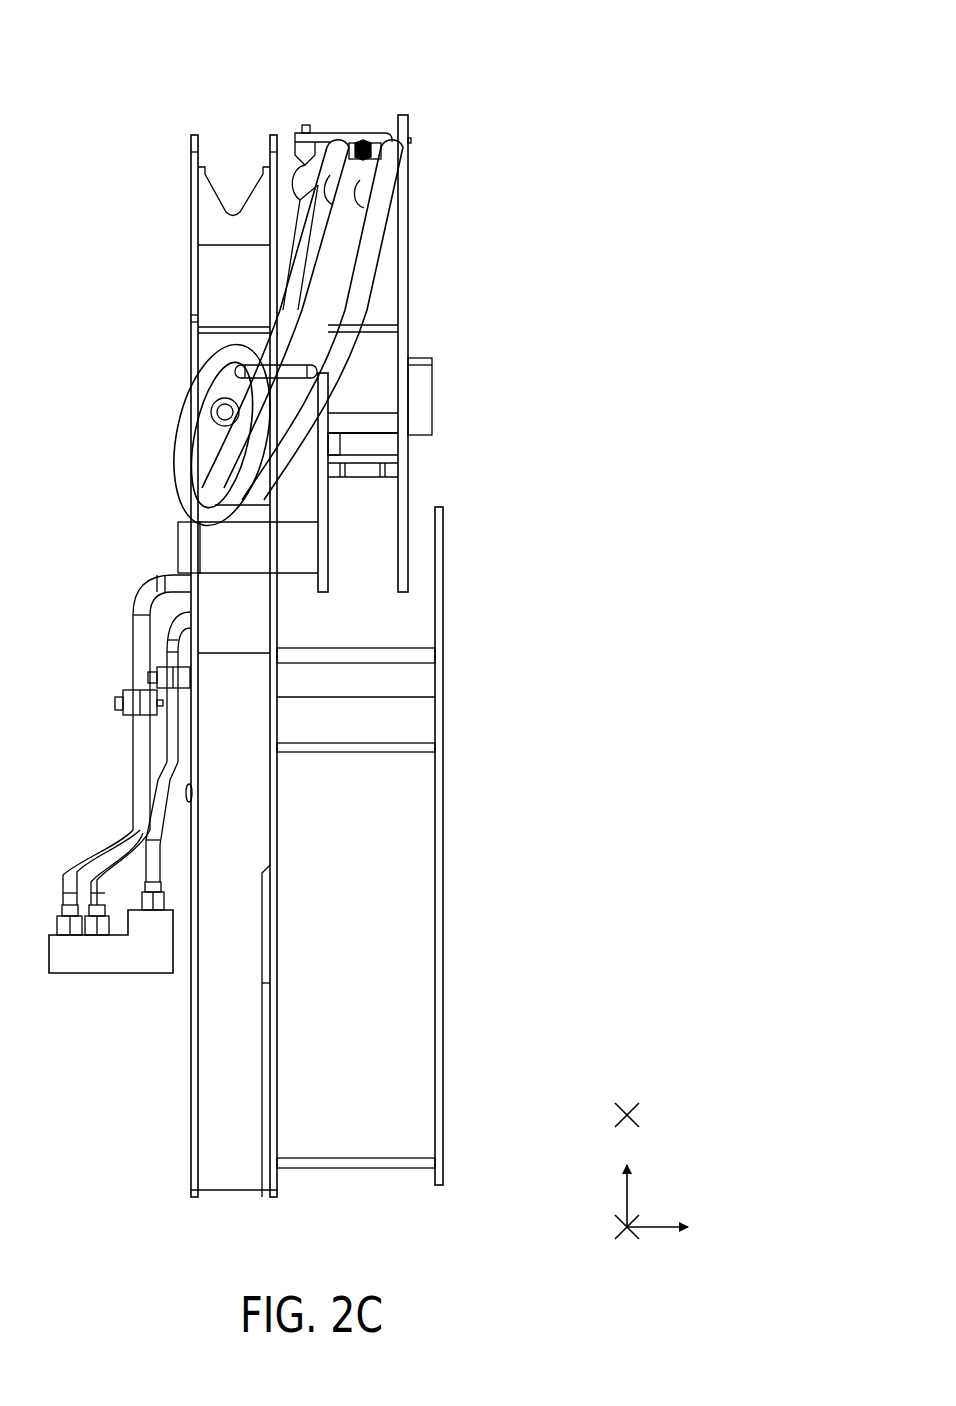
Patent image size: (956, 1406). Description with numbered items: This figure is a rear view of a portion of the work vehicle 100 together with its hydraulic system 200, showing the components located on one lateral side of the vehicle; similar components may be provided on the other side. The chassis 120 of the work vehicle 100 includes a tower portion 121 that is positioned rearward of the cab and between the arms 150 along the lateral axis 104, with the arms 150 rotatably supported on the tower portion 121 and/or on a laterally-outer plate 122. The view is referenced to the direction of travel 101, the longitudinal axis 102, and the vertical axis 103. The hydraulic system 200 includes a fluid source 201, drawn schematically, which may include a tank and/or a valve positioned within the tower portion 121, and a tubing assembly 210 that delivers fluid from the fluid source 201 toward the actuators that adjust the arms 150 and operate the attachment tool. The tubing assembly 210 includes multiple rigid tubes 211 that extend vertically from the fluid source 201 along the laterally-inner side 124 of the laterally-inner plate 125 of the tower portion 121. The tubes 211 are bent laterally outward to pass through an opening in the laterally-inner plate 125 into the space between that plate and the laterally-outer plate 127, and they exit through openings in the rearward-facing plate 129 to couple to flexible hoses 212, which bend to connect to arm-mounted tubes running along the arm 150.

The work vehicle 100 is at (442, 34).
The hydraulic system 200 is at (492, 63).
The tubing assembly 210 is at (420, 110).
The hoses 212 is at (397, 158).
The arms 150 is at (402, 265).
The laterally-inner plate 125 is at (192, 133).
The laterally-outer plate 127 is at (273, 133).
The laterally-inner side 124 is at (186, 270).
The rearward-facing plate 129 is at (207, 354).
The tubes 211 is at (140, 638).
The fluid source 201 is at (110, 973).
The laterally-outer plate 122 is at (441, 1003).
The tower portion 121 is at (157, 1118).
The chassis 120 is at (174, 1200).
The direction of travel 101 is at (617, 1115).
The longitudinal axis 102 is at (617, 1227).
The vertical axis 103 is at (627, 1200).
The lateral axis 104 is at (653, 1227).